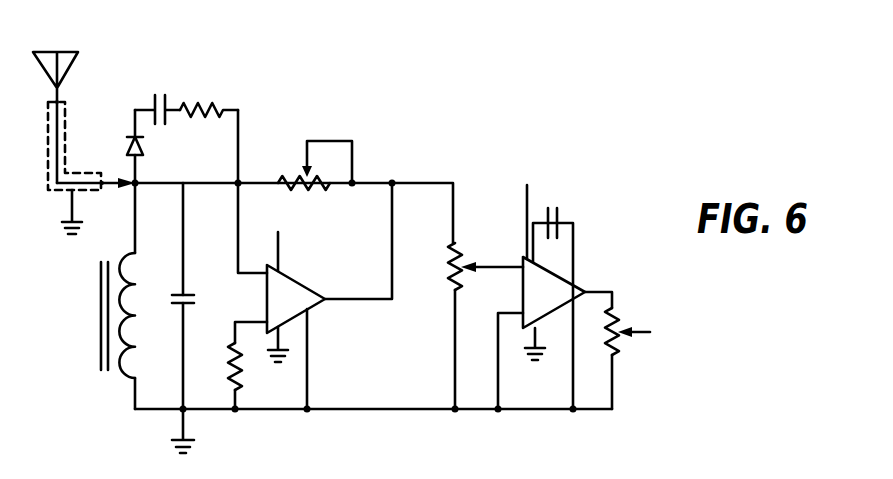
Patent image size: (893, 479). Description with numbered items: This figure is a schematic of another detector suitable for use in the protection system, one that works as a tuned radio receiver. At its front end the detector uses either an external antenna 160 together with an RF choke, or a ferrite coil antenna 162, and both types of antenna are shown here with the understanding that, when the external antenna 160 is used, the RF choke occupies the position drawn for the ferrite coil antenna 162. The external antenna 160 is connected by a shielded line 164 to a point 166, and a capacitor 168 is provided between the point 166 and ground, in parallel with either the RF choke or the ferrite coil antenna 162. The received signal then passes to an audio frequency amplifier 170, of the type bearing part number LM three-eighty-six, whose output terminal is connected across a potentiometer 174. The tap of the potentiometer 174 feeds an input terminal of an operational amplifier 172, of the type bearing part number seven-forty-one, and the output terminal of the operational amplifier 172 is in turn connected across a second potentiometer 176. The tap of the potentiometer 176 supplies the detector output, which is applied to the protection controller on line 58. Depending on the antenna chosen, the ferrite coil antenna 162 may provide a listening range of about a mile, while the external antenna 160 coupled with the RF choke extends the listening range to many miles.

The external antenna 160 is at (78, 56).
The shielded line 164 is at (65, 128).
The point 166 is at (137, 181).
The ferrite coil antenna 162 is at (132, 325).
The capacitor 168 is at (197, 299).
The audio frequency amplifier 170 is at (302, 308).
The potentiometer 174 is at (444, 266).
The operational amplifier 172 is at (556, 301).
The potentiometer 176 is at (616, 310).
The line 58 is at (640, 333).